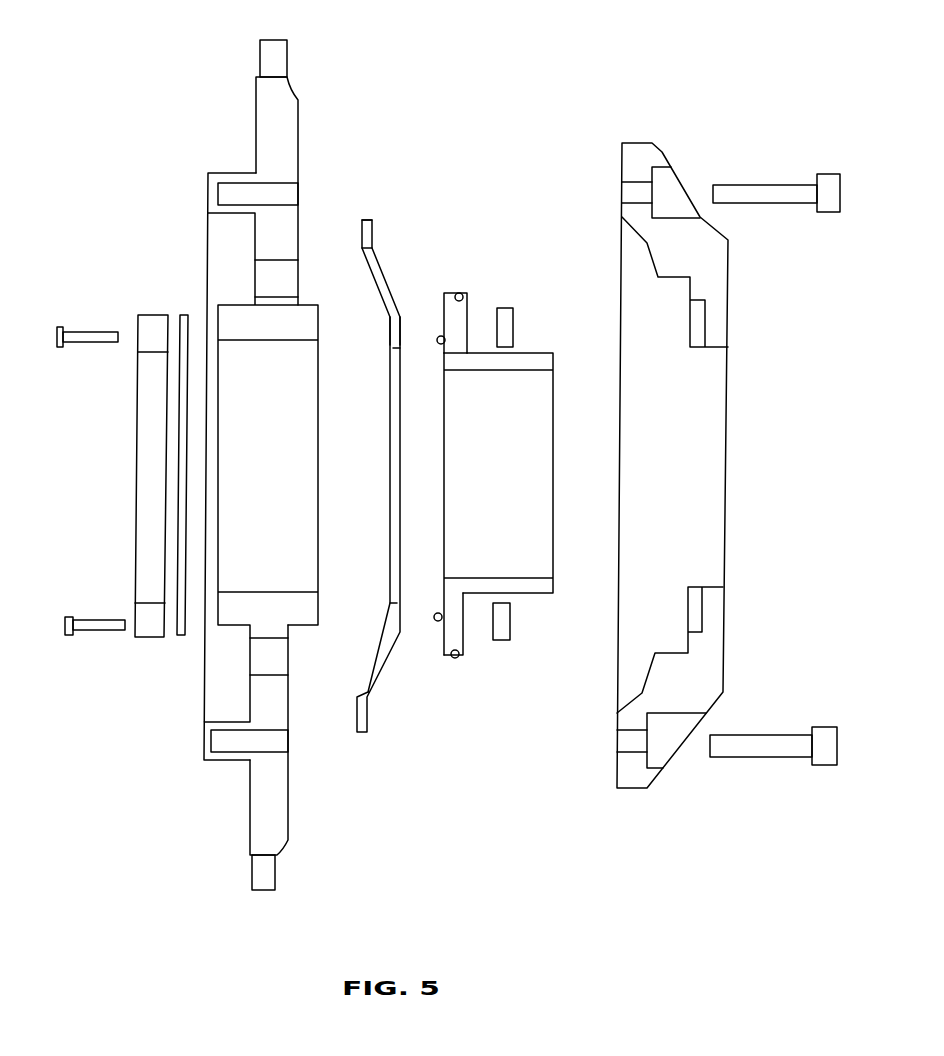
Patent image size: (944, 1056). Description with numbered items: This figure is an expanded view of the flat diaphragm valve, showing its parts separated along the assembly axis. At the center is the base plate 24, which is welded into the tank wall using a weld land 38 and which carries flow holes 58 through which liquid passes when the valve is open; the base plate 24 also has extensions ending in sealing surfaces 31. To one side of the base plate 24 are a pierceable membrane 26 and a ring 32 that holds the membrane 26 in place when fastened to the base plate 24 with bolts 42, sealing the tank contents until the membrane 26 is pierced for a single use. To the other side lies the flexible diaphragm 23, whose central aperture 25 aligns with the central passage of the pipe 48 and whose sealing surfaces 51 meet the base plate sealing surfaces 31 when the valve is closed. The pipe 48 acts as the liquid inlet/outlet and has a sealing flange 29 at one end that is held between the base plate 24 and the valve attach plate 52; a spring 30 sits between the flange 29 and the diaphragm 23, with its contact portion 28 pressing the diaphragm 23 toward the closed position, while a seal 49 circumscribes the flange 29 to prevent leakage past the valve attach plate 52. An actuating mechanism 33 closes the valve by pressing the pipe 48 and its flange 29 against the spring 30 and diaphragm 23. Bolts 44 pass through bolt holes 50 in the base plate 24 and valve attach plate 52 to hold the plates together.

The flexible diaphragm/membrane 23 is at (377, 262).
The base plate 24 is at (282, 105).
The central aperture of the diaphragm 25 is at (388, 550).
The pierceable membrane 26 is at (187, 438).
The spring contact portion 28 is at (442, 337).
The sealing flange 29 is at (468, 317).
The spring 30 is at (445, 342).
The sealing surfaces 31 is at (315, 608).
The ring 32 is at (148, 335).
The actuating mechanism 33 is at (515, 337).
The weld land 38 is at (273, 62).
The bolts 42 is at (95, 345).
The bolts 44 is at (752, 193).
The pipe 48 is at (518, 518).
The seal 49 is at (460, 293).
The bolt holes 50 is at (270, 198).
The sealing surfaces of the diaphragm 51 is at (390, 332).
The valve attach plate 52 is at (632, 158).
The flow holes 58 is at (273, 655).